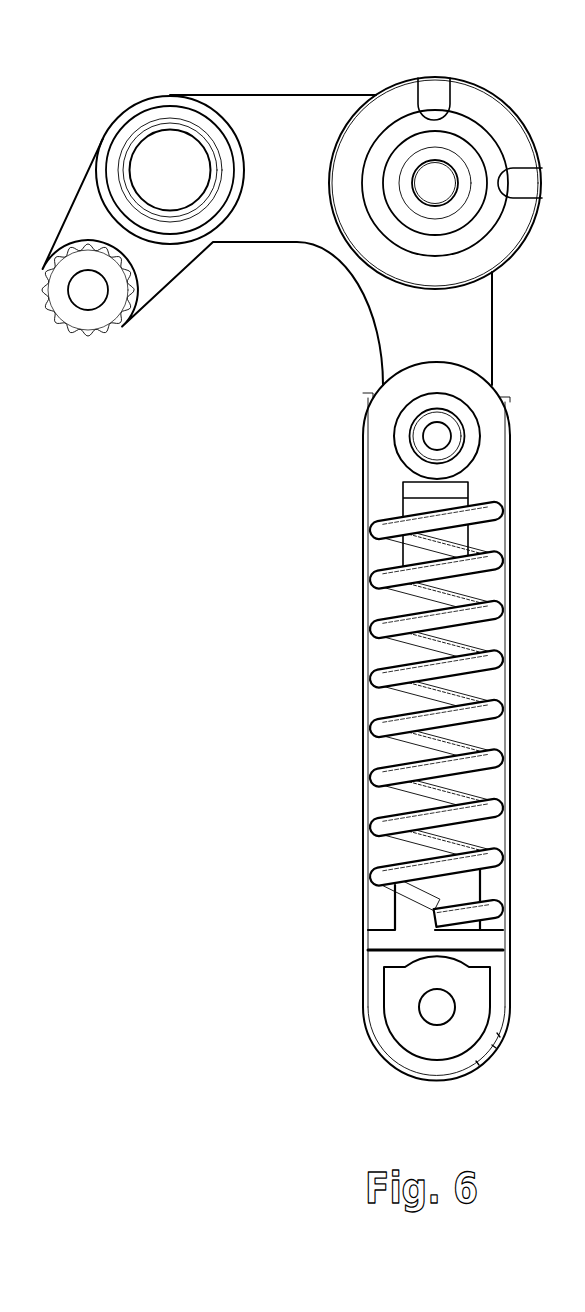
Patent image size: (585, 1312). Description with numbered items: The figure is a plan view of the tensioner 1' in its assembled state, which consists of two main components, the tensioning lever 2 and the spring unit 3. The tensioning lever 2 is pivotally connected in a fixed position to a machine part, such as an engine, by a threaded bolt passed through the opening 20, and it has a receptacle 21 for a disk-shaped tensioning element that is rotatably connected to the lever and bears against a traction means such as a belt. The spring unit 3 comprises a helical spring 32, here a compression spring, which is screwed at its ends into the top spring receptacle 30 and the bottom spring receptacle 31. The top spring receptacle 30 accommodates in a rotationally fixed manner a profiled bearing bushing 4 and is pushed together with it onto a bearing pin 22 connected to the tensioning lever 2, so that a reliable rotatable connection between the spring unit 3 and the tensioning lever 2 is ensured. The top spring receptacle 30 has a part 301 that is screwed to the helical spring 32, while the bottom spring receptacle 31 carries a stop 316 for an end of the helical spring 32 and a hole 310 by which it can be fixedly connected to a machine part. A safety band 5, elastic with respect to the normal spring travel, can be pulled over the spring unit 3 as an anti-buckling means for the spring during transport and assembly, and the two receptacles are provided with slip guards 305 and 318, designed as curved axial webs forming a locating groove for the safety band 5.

The tensioner 1' is at (87, 181).
The tensioning lever 2 is at (266, 98).
The opening 20 is at (162, 137).
The receptacle 21 is at (493, 92).
The bearing pin 22 is at (455, 430).
The spring unit 3 is at (341, 713).
The spring receptacle 30 is at (383, 467).
The part 301 is at (420, 550).
The slip guard 305 is at (383, 393).
The spring receptacle 31 is at (412, 1035).
The hole 310 is at (447, 997).
The stop 316 is at (435, 908).
The slip guard 318 is at (493, 1055).
The helical spring 32 is at (465, 795).
The bearing bushing 4 is at (470, 450).
The safety band 5 is at (505, 688).